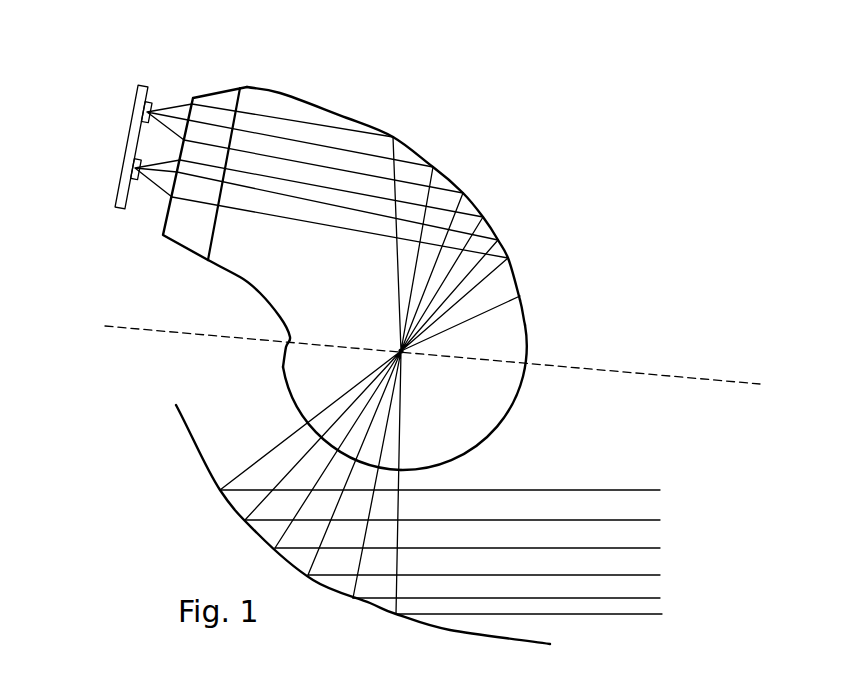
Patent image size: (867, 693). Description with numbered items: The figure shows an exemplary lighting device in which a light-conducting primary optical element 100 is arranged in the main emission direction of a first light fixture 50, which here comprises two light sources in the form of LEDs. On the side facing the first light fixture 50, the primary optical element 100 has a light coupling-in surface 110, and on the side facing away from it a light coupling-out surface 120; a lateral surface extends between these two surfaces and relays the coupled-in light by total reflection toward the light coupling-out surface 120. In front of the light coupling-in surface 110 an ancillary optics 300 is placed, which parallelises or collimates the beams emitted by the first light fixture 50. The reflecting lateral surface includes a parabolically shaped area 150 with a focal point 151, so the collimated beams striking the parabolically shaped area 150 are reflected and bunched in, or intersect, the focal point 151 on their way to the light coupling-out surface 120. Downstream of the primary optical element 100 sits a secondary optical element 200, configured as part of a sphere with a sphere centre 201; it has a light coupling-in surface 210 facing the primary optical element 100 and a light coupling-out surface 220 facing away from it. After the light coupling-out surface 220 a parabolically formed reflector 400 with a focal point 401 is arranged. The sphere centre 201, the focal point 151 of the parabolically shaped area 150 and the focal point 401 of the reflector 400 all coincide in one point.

The first light fixture 50 is at (135, 125).
The primary optical element 100 is at (326, 269).
The light coupling-in surface 110 is at (215, 228).
The light coupling-out surface 120 is at (352, 347).
The parabolically shaped area 150 is at (472, 202).
The focal point 151 is at (520, 296).
The secondary optical element 200 is at (490, 374).
The sphere centre 201 is at (401, 351).
The light coupling-in surface 210 is at (327, 348).
The light coupling-out surface 220 is at (490, 433).
The ancillary optics 300 is at (222, 99).
The parabolically formed reflector 400 is at (257, 535).
The focal point 401 is at (401, 351).